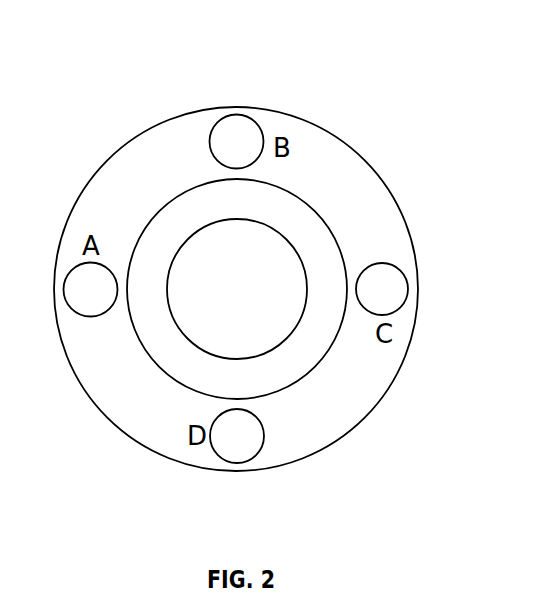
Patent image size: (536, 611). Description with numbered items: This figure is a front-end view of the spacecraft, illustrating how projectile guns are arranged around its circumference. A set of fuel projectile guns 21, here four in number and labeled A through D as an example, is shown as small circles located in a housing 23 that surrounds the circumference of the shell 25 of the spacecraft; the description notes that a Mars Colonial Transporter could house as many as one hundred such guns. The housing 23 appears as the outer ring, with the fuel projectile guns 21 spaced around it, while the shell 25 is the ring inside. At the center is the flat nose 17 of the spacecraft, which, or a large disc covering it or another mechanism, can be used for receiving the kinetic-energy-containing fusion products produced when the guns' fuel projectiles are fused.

The flat nose 17 is at (250, 300).
The fuel projectile guns 21 is at (235, 130).
The housing 23 is at (339, 441).
The shell 25 is at (305, 377).